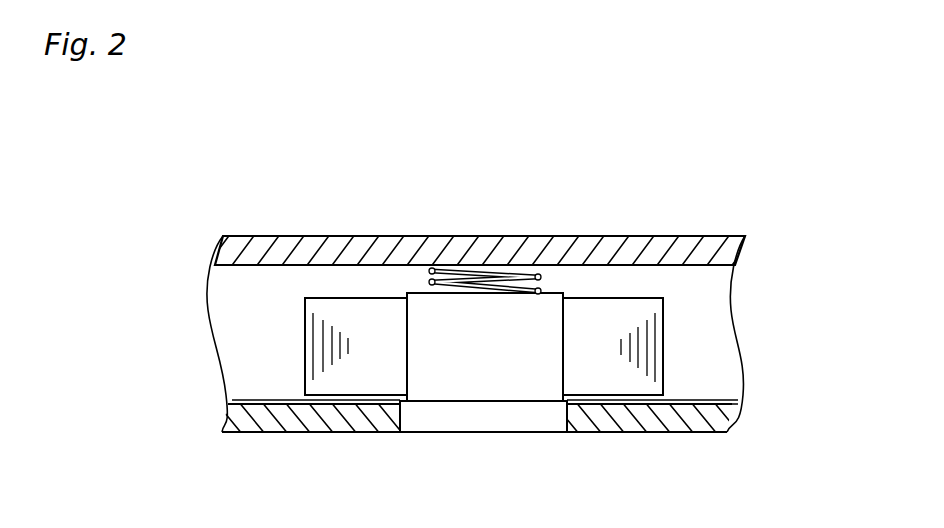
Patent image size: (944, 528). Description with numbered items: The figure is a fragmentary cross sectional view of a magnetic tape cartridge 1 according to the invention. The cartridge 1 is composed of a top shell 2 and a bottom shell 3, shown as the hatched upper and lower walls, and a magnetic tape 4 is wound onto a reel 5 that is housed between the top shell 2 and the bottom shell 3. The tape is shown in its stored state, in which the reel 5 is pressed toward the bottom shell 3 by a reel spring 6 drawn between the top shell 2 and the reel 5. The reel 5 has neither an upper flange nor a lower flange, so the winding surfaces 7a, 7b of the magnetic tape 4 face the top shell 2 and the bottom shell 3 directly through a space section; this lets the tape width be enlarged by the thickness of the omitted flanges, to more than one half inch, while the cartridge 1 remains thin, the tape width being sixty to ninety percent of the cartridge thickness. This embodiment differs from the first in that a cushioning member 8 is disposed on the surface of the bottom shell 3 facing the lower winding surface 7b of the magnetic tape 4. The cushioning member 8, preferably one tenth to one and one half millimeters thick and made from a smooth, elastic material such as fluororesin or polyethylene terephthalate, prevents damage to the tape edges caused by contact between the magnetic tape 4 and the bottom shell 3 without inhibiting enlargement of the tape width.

The cartridge 1 is at (553, 224).
The top shell 2 is at (727, 257).
The bottom shell 3 is at (708, 422).
The magnetic tape 4 is at (368, 372).
The reel 5 is at (470, 385).
The reel spring 6 is at (470, 273).
The winding surface 7a is at (602, 298).
The winding surface 7b is at (628, 401).
The cushioning member 8 is at (694, 403).